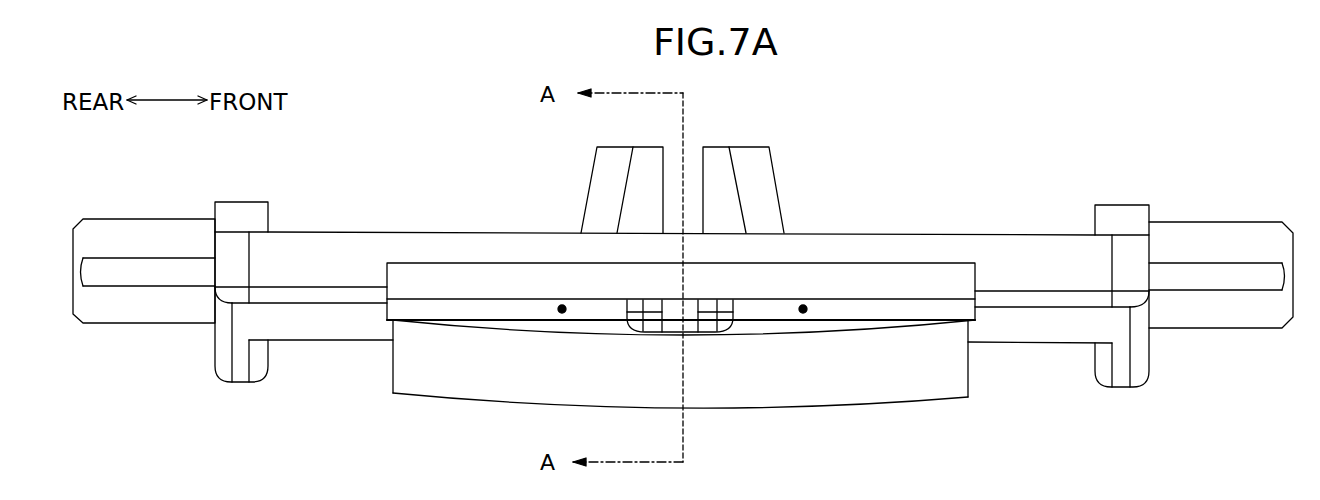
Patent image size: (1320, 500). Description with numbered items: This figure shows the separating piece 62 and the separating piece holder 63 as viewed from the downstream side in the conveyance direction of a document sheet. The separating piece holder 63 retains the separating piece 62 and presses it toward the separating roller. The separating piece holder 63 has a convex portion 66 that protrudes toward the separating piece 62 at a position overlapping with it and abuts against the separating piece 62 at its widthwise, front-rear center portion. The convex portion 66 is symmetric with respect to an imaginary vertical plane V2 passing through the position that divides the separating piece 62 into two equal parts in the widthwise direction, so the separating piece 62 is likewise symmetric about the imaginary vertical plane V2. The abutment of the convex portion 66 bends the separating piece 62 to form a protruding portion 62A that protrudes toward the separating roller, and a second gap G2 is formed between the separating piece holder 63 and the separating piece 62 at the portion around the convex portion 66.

The separating piece 62 is at (690, 408).
The protruding portion 62A is at (687, 408).
The separating piece holder 63 is at (1042, 198).
The convex portion 66 is at (733, 310).
The second gap G2 is at (803, 310).
The imaginary vertical plane V2 is at (683, 152).